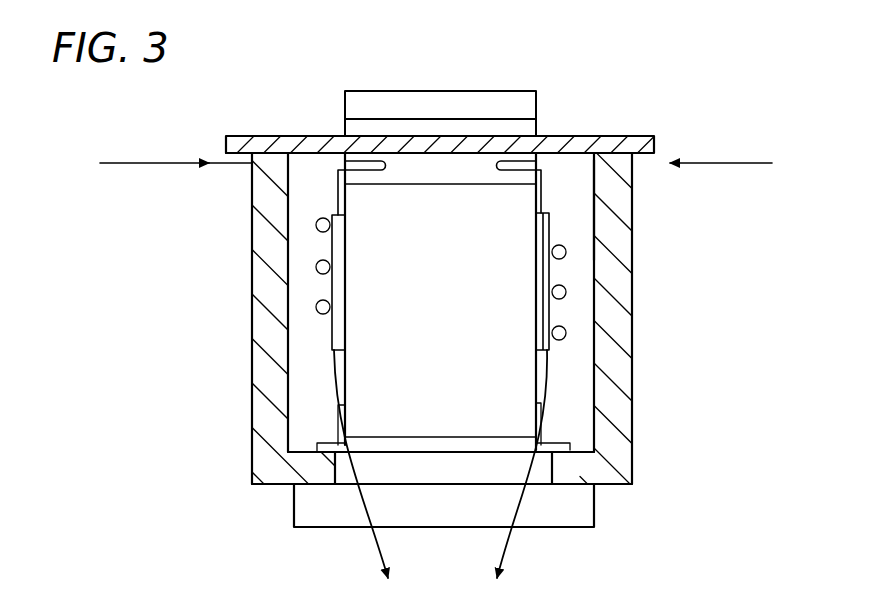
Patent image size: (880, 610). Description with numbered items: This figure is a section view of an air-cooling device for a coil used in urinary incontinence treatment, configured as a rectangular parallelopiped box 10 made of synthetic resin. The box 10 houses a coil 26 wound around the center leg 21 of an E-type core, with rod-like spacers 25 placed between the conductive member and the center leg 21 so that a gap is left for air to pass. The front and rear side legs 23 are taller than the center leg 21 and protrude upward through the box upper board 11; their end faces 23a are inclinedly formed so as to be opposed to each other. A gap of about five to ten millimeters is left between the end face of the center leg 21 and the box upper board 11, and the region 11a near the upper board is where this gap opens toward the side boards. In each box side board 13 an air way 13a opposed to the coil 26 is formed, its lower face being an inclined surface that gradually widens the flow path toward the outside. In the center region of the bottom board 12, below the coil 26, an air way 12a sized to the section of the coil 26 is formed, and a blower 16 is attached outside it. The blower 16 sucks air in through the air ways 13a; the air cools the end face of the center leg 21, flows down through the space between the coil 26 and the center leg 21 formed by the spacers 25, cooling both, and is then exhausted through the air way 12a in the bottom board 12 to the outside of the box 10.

The box 10 is at (680, 354).
The box upper board 11 is at (611, 136).
The opening in top plate 11a is at (236, 156).
The bottom board 12 is at (620, 486).
The air way 12a is at (551, 472).
The box side board 13 is at (620, 287).
The air way 13a is at (620, 180).
The blower 16 is at (293, 508).
The center leg 21 is at (463, 185).
The side legs 23 is at (385, 152).
The end faces 23a is at (421, 100).
The rod-like spacers 25 is at (333, 334).
The coil 26 is at (316, 268).